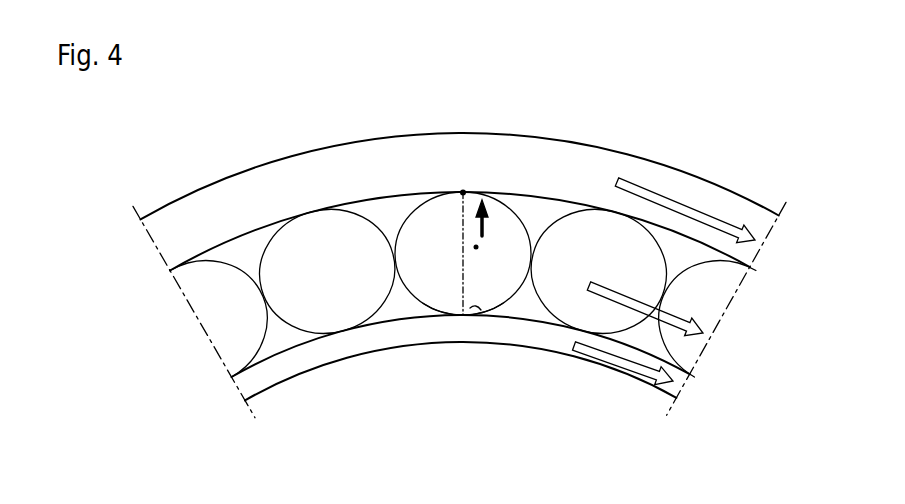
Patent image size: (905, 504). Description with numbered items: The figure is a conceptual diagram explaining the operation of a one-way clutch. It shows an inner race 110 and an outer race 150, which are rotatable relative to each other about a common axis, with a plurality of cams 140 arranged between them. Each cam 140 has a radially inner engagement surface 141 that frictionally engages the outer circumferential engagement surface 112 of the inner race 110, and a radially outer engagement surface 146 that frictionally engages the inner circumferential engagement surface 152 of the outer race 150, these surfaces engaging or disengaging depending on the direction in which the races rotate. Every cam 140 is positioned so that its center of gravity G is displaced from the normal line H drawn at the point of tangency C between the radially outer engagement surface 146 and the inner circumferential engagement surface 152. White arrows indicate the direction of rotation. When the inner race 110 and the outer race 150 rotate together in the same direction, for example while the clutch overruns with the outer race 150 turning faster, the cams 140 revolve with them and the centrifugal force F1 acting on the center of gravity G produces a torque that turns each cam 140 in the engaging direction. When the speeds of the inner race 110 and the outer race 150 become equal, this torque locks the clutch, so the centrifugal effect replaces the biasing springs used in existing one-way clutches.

The inner race 110 is at (620, 375).
The outer circumferential engagement surface 112 is at (421, 316).
The cam 140 is at (325, 228).
The radially inner engagement surface 141 is at (455, 316).
The radially outer engagement surface 146 is at (467, 192).
The outer race 150 is at (658, 167).
The inner circumferential engagement surface 152 is at (437, 195).
The point of tangency C is at (463, 192).
The center of gravity G is at (481, 263).
The normal line H is at (479, 312).
The centrifugal force F1 is at (495, 220).